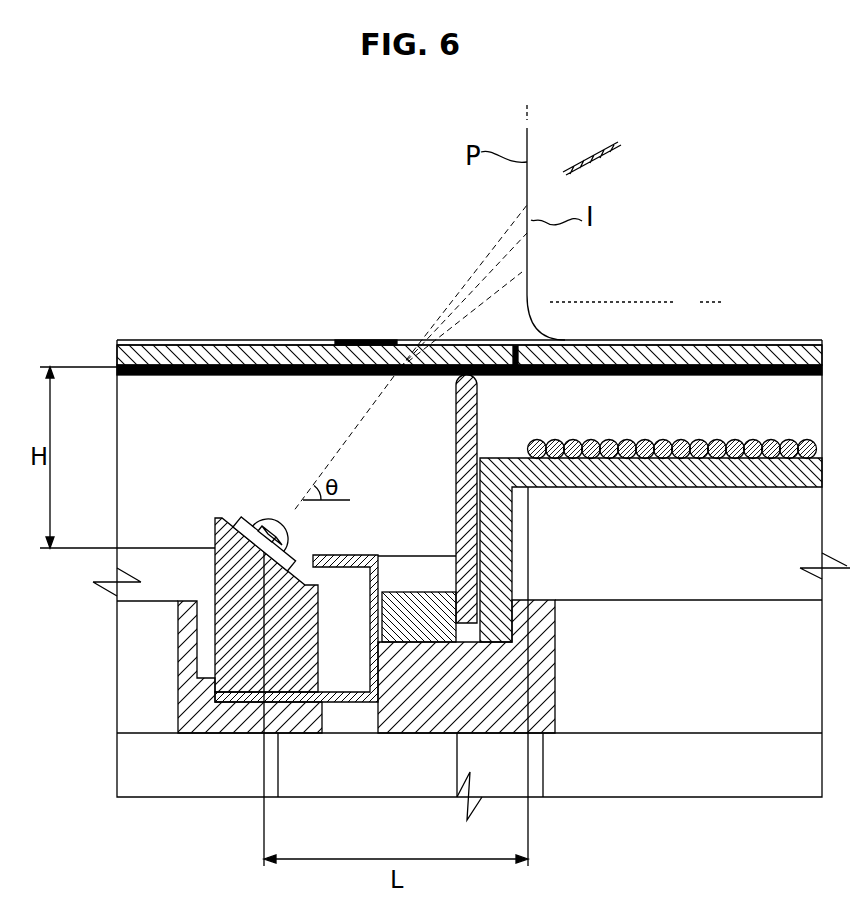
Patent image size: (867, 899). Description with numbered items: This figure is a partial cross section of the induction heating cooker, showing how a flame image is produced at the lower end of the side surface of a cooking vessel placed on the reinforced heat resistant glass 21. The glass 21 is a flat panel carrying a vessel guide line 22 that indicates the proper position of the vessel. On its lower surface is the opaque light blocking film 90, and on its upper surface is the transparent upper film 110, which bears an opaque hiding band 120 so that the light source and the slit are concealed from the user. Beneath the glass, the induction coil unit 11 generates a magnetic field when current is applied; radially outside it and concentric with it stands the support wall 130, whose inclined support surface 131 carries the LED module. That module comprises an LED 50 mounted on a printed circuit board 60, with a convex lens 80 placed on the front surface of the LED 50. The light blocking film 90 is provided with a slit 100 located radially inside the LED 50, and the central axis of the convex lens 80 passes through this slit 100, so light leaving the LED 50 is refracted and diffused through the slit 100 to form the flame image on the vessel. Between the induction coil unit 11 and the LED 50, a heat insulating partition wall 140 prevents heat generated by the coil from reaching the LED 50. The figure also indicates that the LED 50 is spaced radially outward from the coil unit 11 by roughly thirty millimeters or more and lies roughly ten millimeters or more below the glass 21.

The induction coil unit 11 is at (720, 440).
The reinforced heat resistant glass 21 is at (117, 355).
The vessel guide line 22 is at (520, 366).
The LED 50 is at (246, 524).
The printed circuit board 60 is at (213, 532).
The convex lens 80 is at (272, 516).
The light blocking film 90 is at (138, 376).
The slit 100 is at (400, 366).
The upper film 110 is at (133, 343).
The hiding band 120 is at (362, 340).
The support wall 130 is at (200, 645).
The support surface 131 is at (205, 604).
The heat insulating partition wall 140 is at (456, 457).